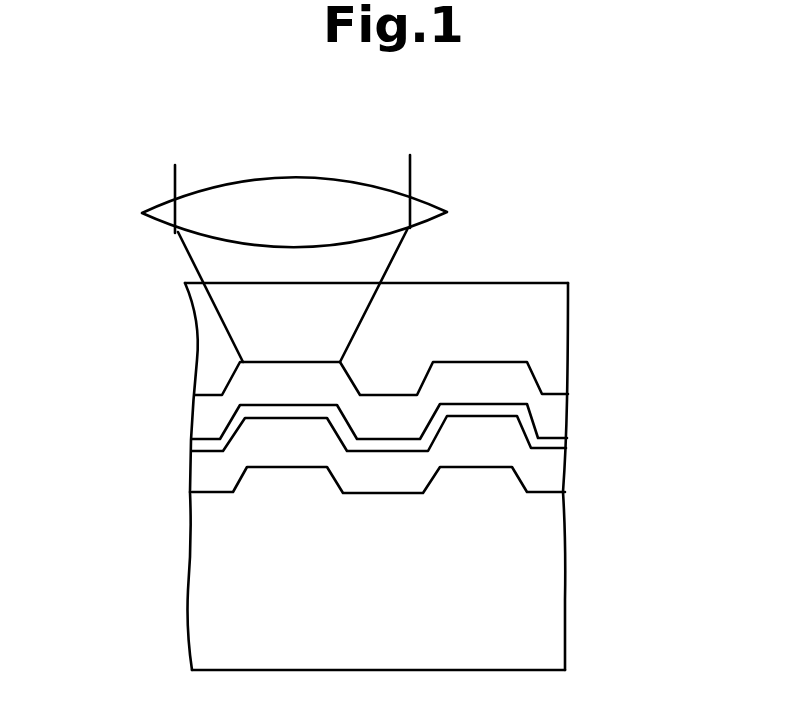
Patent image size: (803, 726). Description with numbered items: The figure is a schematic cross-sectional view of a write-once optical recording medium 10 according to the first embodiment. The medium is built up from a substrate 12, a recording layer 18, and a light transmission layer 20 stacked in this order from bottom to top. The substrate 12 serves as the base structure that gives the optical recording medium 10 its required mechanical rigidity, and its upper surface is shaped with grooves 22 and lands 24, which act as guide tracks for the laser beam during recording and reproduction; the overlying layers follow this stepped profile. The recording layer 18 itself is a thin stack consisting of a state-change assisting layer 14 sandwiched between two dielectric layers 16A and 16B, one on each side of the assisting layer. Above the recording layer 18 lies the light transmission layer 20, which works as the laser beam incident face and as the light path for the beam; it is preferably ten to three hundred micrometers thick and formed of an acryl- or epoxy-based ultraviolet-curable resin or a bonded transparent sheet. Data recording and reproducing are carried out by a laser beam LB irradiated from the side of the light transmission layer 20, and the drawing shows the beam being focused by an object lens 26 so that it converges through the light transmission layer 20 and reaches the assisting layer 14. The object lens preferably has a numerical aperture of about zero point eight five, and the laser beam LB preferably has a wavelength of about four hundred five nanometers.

The optical recording medium 10 is at (155, 294).
The substrate 12 is at (533, 580).
The state-change assisting layer 14 is at (548, 438).
The dielectric layer 16A is at (548, 413).
The dielectric layer 16B is at (548, 478).
The recording layer 18 is at (463, 445).
The light transmission layer 20 is at (553, 333).
The groove 22 is at (278, 465).
The land 24 is at (392, 490).
The objective lens 26 is at (432, 203).
The laser beam LB is at (400, 173).